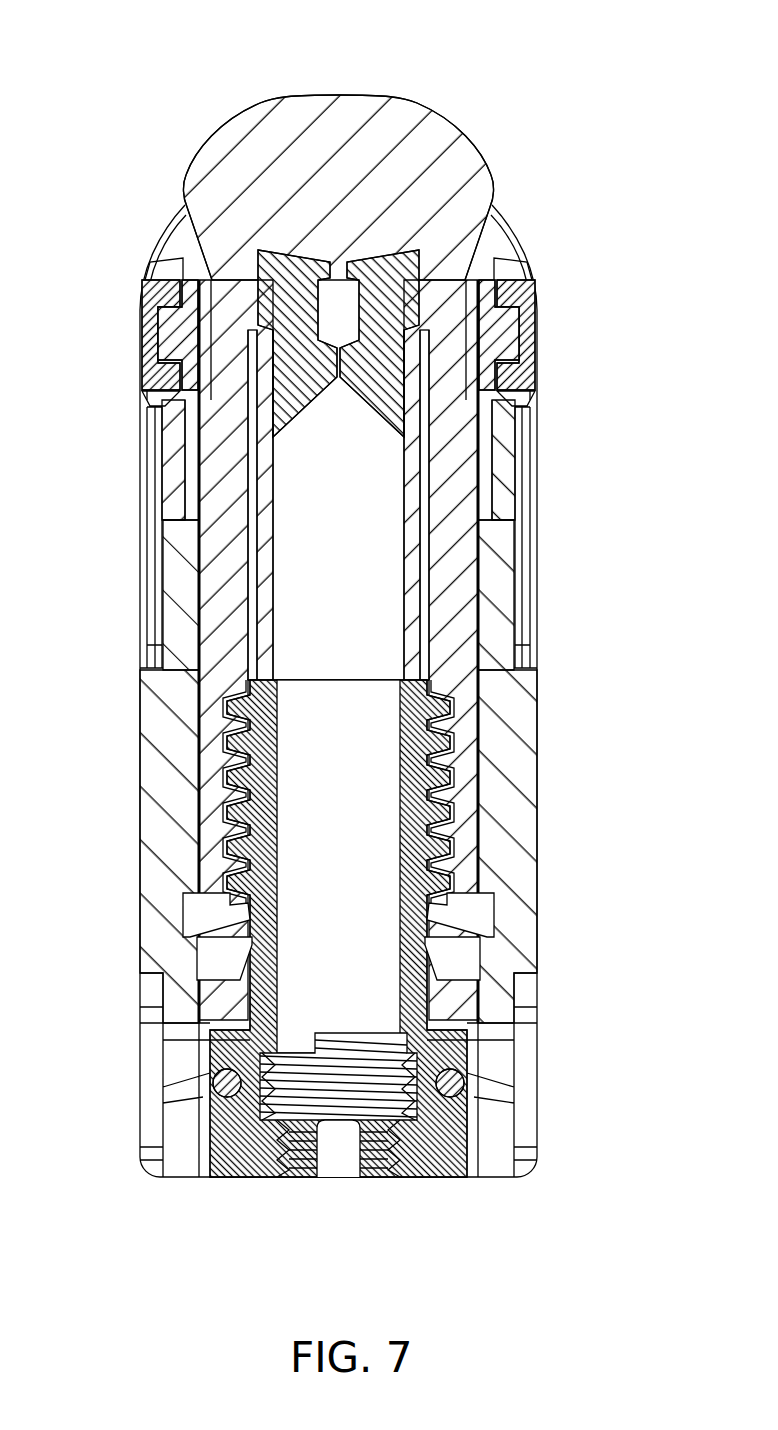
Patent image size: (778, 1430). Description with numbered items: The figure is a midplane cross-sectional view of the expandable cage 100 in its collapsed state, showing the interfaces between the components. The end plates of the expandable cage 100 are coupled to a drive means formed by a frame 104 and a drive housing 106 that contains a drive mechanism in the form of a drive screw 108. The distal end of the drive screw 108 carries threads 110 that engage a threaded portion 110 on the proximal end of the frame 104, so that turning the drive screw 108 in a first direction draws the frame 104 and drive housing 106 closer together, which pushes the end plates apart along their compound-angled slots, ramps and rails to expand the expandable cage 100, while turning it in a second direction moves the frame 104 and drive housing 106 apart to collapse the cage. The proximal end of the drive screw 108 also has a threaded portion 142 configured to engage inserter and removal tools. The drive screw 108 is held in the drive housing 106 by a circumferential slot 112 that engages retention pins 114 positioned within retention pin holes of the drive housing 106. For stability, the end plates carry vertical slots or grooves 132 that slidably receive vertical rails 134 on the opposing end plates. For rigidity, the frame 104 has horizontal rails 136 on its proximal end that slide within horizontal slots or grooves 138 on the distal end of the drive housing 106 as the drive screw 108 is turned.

The expandable cage 100 is at (146, 36).
The frame 104 is at (360, 92).
The drive housing 106 is at (540, 1130).
The drive screw 108 is at (432, 1165).
The threads 110 is at (393, 714).
The circumferential slot 112 is at (455, 830).
The retention pins 114 is at (452, 1088).
The vertical slots or grooves 132 is at (148, 366).
The vertical rails 134 is at (150, 305).
The horizontal rails 136 is at (540, 622).
The horizontal slots or grooves 138 is at (537, 910).
The threaded portion 142 is at (315, 1150).